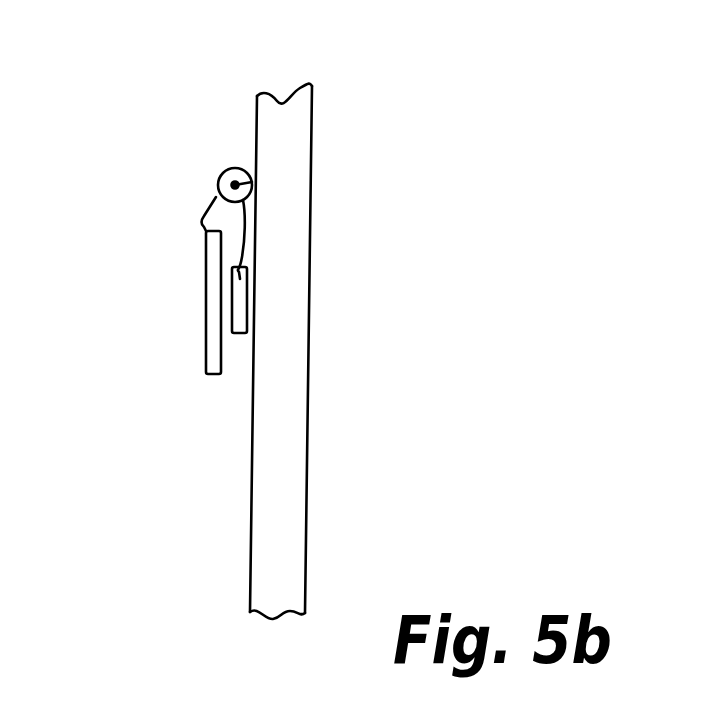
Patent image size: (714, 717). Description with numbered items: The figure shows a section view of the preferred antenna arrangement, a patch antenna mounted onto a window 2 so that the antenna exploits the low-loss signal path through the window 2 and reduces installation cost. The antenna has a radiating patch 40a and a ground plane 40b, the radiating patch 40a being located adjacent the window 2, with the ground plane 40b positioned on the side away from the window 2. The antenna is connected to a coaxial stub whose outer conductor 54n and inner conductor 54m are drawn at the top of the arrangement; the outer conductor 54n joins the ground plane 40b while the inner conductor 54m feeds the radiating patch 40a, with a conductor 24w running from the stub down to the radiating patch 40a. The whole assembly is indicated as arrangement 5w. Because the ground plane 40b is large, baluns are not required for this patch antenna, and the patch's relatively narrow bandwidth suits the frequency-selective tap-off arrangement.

The window 2 is at (280, 425).
The outer conductor of the coaxial stub 54n is at (219, 186).
The inner conductor of the coaxial stub 54m is at (255, 178).
The wire 24w is at (224, 171).
The ground plane 40b is at (205, 283).
The radiating patch 40a is at (248, 304).
The assembly 5w is at (153, 353).